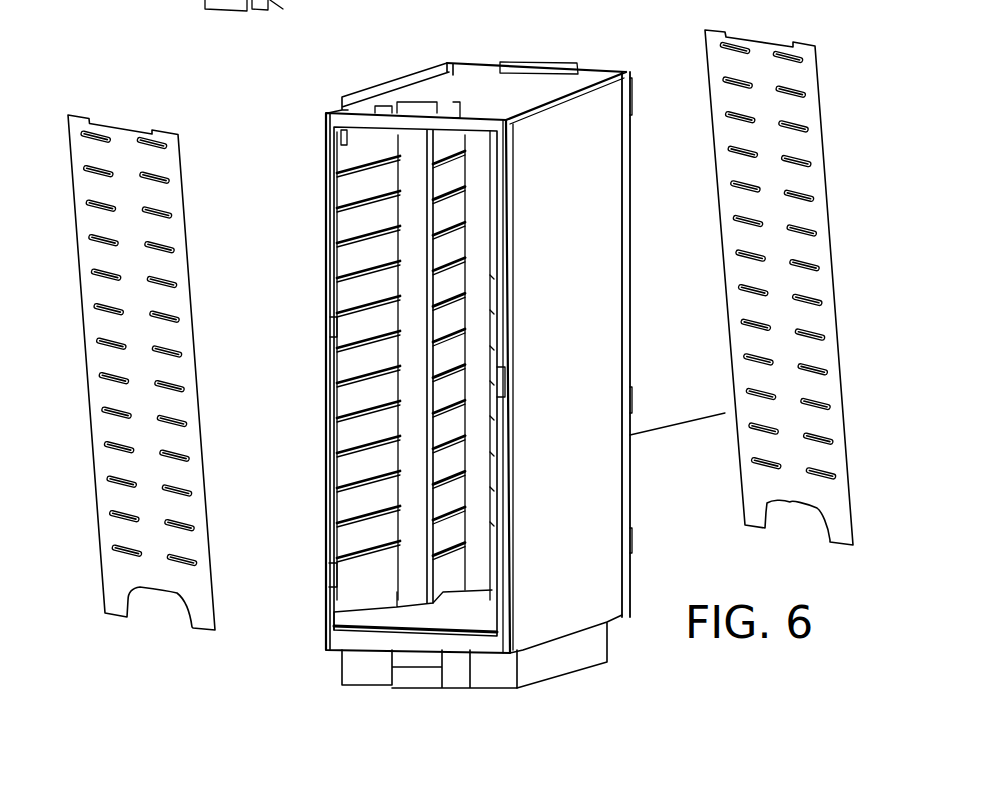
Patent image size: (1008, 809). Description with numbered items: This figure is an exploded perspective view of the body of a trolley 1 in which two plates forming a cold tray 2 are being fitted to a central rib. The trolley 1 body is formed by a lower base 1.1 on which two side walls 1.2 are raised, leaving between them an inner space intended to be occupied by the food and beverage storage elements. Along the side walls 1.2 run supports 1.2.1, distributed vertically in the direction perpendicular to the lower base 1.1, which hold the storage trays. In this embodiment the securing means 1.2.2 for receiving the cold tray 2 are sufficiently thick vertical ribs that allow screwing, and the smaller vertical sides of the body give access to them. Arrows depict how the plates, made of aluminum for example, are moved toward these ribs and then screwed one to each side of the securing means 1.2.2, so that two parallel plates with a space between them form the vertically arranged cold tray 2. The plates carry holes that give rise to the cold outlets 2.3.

The trolley 1 is at (578, 337).
The lower base 1.1 is at (377, 610).
The side walls 1.2 is at (565, 472).
The supports 1.2.1 is at (495, 463).
The securing means 1.2.2 is at (495, 143).
The cold tray 2 is at (160, 434).
The cold outlets 2.3 is at (100, 167).